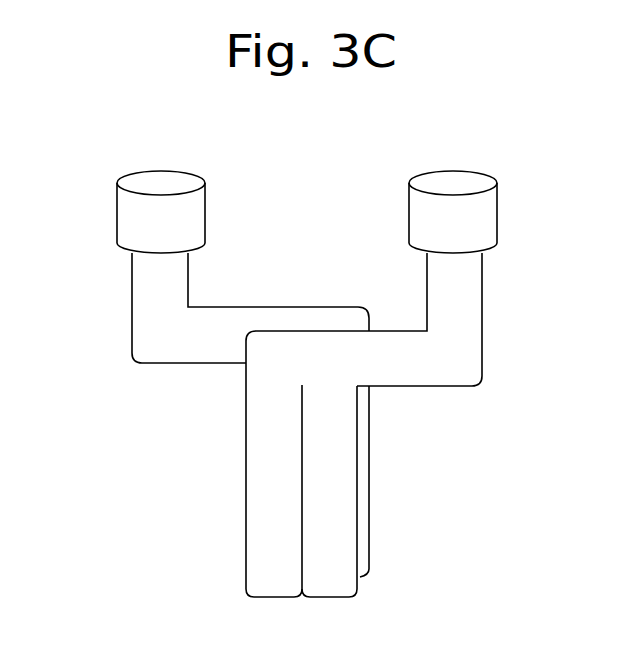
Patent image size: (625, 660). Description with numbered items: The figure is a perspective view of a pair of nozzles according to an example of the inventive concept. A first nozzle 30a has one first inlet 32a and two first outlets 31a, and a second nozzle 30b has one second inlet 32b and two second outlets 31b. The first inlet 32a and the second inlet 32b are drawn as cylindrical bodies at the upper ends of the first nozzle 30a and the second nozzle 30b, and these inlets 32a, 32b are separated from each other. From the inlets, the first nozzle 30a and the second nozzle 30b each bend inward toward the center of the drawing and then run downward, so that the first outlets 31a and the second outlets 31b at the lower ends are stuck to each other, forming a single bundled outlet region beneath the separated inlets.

The first inlet 32a is at (491, 212).
The second inlet 32b is at (122, 213).
The first nozzle 30a is at (470, 348).
The second nozzle 30b is at (144, 322).
The first outlet 31a is at (358, 575).
The second outlet 31b is at (275, 599).